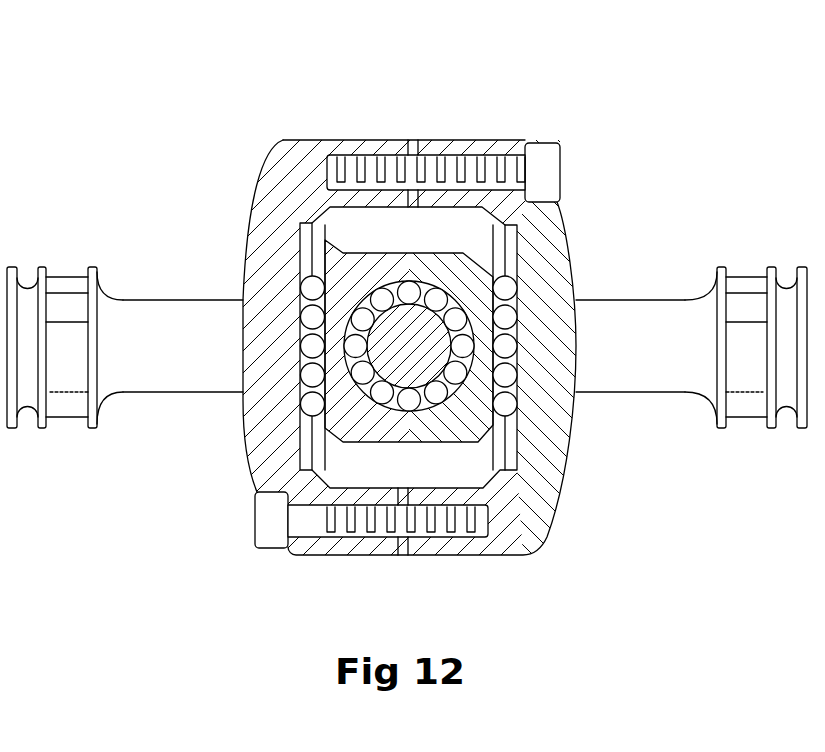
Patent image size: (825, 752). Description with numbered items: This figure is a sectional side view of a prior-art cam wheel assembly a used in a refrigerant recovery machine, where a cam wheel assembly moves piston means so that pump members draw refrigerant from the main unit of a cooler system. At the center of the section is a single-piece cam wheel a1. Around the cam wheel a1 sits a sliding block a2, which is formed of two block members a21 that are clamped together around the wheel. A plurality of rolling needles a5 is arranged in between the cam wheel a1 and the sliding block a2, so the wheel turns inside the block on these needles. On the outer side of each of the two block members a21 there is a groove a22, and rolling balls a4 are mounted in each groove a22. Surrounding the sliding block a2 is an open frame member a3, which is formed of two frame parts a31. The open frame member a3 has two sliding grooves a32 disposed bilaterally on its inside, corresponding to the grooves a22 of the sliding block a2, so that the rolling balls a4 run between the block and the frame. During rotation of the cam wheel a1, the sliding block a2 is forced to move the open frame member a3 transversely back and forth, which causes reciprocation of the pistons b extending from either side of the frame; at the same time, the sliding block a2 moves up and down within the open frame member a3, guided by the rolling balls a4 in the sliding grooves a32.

The cam wheel assembly a is at (578, 128).
The single-piece cam wheel a1 is at (395, 322).
The sliding block a2 is at (495, 437).
The block member a21 is at (258, 514).
The groove a22 is at (318, 388).
The open frame member a3 is at (567, 238).
The frame part a31 is at (256, 444).
The sliding groove a32 is at (310, 235).
The rolling balls a4 is at (305, 290).
The rolling needles a5 is at (410, 290).
The pistons b is at (65, 283).